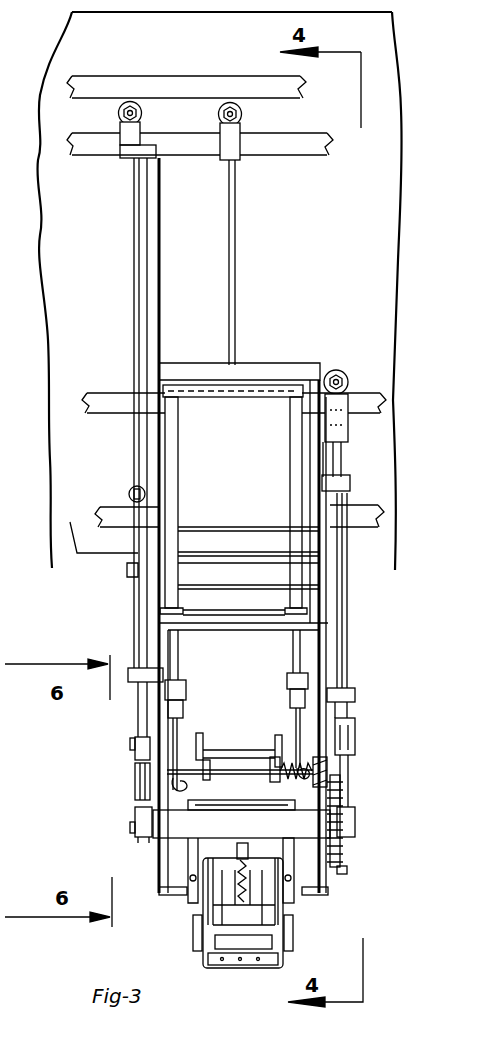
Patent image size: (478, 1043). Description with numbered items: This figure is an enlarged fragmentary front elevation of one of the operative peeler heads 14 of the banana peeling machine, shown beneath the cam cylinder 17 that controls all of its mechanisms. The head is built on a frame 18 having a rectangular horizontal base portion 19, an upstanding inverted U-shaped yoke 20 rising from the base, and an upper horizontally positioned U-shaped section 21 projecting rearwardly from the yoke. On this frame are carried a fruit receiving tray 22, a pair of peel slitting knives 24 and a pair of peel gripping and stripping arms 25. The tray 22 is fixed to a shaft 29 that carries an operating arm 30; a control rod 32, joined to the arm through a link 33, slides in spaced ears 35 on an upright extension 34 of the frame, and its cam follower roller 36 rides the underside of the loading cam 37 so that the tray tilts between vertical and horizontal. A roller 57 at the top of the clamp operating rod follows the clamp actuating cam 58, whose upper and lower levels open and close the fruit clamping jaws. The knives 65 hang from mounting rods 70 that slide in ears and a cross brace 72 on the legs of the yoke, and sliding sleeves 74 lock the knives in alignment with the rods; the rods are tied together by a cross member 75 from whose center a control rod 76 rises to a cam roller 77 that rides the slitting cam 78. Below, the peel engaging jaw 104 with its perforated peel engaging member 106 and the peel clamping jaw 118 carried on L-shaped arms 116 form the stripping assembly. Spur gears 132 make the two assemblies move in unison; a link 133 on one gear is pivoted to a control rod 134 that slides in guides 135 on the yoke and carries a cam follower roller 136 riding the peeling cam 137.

The peeler head 14 is at (128, 597).
The cam cylinder 17 is at (38, 231).
The frame 18 is at (334, 603).
The base portion 19 is at (307, 832).
The yoke 20 is at (327, 663).
The upper section 21 is at (278, 581).
The fruit receiving tray 22 is at (210, 741).
The peel slitting knives 24 is at (184, 703).
The peel gripping and stripping arms 25 is at (307, 944).
The shaft 29 is at (235, 779).
The operating arm 30 is at (135, 785).
The control rod 32 is at (137, 710).
The link 33 is at (135, 762).
The upright extension 34 is at (161, 316).
The ears 35 is at (118, 158).
The cam follower roller 36 is at (142, 114).
The loading cam 37 is at (155, 77).
The roller 57 is at (130, 486).
The clamp actuating cam 58 is at (105, 507).
The knives 65 is at (302, 720).
The mounting rod 70 is at (178, 465).
The cross brace 72 is at (246, 623).
The sliding sleeves 74 is at (292, 697).
The cross member 75 is at (248, 366).
The control rod 76 is at (238, 247).
The cam roller 77 is at (242, 118).
The slitting cam 78 is at (305, 157).
The peel engaging jaw 104 is at (283, 962).
The peel engaging member 106 is at (253, 969).
The L-shaped arms 116 is at (258, 928).
The clamping jaw 118 is at (222, 952).
The spur gears 132 is at (347, 868).
The link 133 is at (352, 784).
The control rod 134 is at (348, 641).
The gears 135 is at (351, 490).
The cam follower roller 136 is at (341, 372).
The peeling cam 137 is at (372, 421).